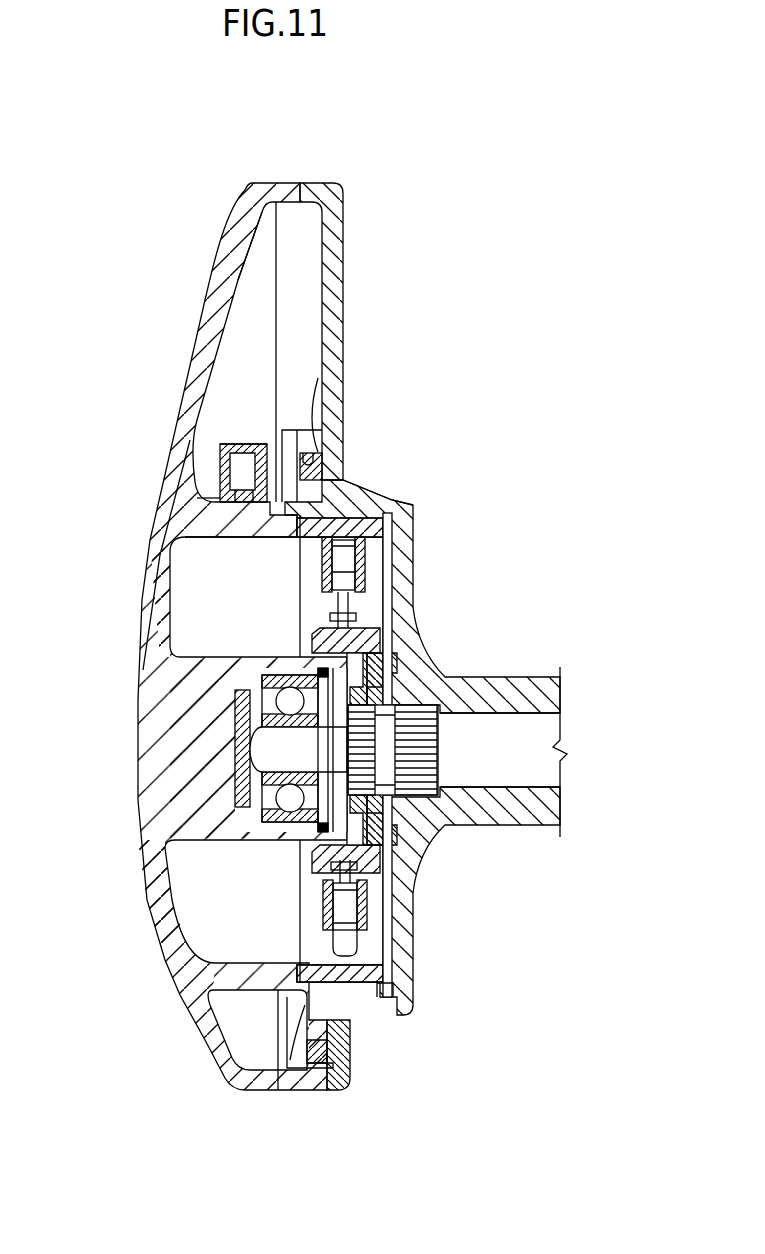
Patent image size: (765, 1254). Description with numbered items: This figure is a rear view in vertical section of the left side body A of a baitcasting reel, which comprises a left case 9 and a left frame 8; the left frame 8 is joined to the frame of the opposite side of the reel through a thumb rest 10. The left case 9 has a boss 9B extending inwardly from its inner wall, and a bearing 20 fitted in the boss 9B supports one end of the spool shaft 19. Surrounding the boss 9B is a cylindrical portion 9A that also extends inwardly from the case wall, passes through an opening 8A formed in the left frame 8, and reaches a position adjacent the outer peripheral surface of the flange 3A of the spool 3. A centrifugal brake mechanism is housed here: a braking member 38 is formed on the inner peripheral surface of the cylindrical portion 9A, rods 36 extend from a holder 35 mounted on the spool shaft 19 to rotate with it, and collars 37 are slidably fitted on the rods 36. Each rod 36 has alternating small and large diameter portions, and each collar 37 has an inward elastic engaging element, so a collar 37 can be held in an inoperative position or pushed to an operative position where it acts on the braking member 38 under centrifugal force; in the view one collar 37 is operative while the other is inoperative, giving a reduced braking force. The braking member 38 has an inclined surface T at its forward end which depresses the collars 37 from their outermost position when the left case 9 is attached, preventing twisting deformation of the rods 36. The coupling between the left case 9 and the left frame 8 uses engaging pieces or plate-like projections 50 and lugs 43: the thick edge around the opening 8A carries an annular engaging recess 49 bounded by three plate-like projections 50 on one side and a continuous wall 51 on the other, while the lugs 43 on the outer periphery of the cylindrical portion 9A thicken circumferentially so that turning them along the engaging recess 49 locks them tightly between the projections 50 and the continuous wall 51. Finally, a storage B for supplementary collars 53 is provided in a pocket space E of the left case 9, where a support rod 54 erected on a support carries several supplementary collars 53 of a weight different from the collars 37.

The spool 3 is at (549, 677).
The flange 3A is at (400, 506).
The left frame 8 is at (310, 188).
The opening 8A is at (360, 476).
The left case 9 is at (266, 190).
The cylindrical portion 9A is at (167, 567).
The boss 9B is at (165, 655).
The thumb rest 10 is at (342, 1042).
The spool shaft 19 is at (515, 780).
The bearing 20 is at (262, 840).
The holder 35 is at (395, 680).
The rods 36 is at (328, 580).
The collars 37 is at (366, 570).
The braking member 38 is at (303, 548).
The engaging lugs 43 is at (342, 466).
The engaging recess 49 is at (323, 400).
The plate-like projections 50 is at (255, 537).
The continuous wall 51 is at (346, 463).
The supplementary collars 53 is at (220, 480).
The support rod 54 is at (245, 442).
The left side body A is at (322, 100).
The storage B is at (220, 433).
The pocket space E is at (252, 322).
The inclined surface T is at (400, 540).